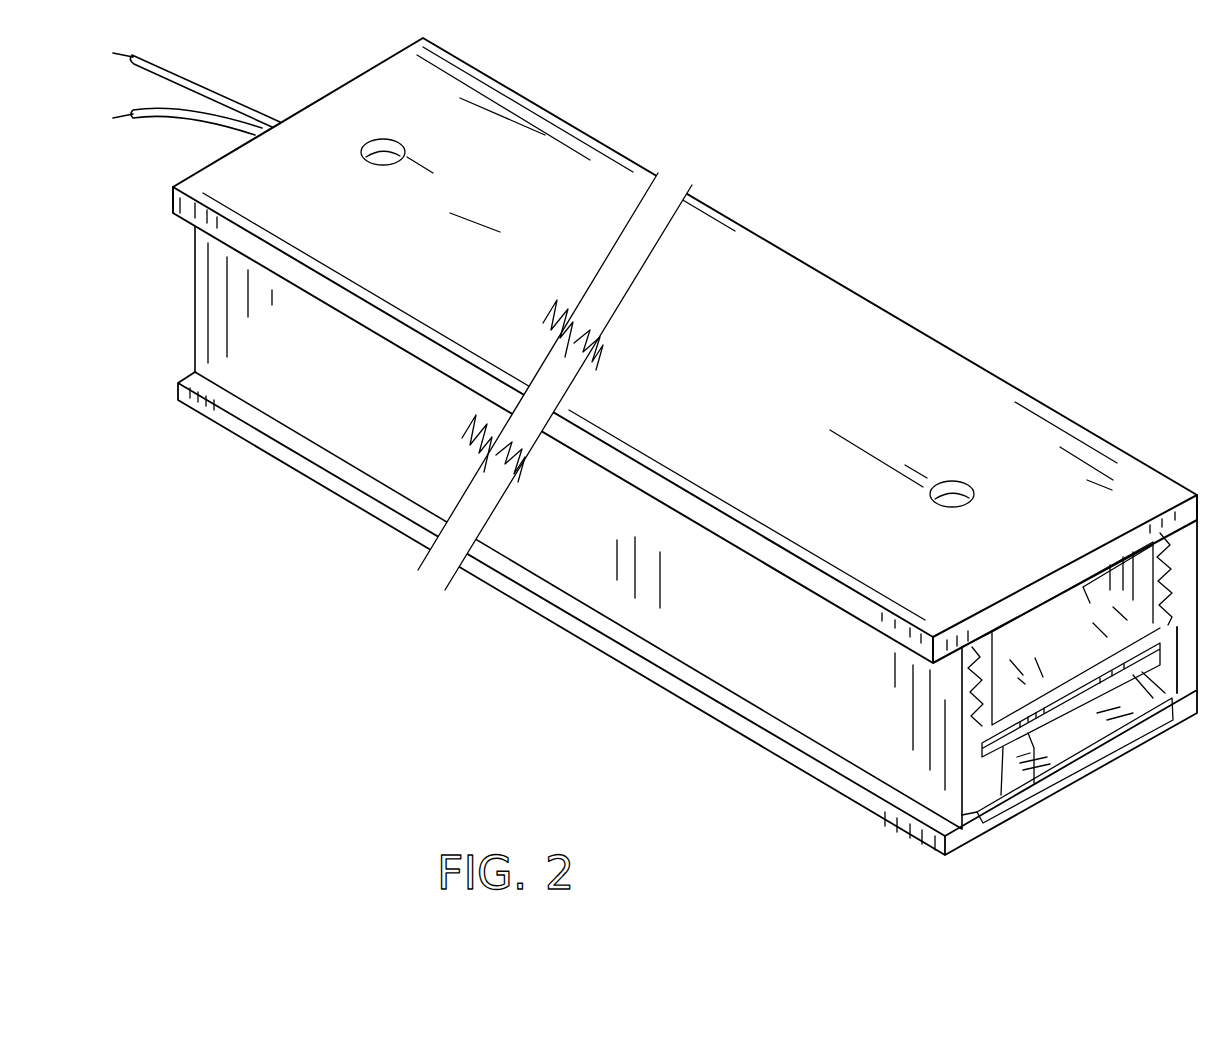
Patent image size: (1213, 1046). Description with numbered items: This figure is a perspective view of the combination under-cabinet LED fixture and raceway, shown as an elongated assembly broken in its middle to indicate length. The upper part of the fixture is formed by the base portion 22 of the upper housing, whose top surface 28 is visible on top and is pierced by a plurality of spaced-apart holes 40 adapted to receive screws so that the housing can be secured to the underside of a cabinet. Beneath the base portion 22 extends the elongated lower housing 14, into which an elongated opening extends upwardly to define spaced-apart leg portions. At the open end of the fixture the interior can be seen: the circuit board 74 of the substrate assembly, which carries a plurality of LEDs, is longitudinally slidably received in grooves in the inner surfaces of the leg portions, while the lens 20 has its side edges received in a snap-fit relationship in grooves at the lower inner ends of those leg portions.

The lower housing 14 is at (787, 692).
The lens 20 is at (1118, 750).
The base portion 22 is at (928, 333).
The top surface 28 is at (760, 392).
The holes 40 is at (388, 151).
The circuit board 74 is at (1060, 713).